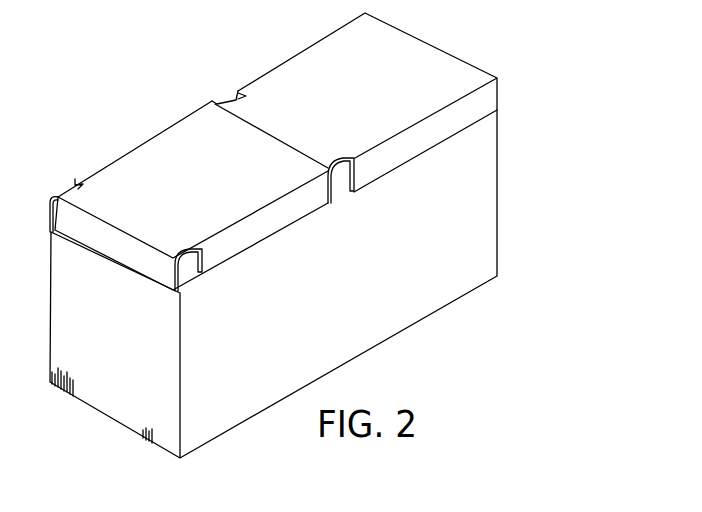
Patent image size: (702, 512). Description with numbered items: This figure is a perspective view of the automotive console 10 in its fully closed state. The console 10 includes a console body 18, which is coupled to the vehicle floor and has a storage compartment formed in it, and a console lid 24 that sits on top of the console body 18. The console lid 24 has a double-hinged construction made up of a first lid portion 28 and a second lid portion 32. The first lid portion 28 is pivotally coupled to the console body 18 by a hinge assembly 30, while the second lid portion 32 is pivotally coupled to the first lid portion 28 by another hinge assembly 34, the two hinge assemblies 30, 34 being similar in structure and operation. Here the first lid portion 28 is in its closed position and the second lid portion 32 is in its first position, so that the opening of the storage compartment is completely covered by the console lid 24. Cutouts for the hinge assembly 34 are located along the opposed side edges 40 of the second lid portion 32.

The automotive console 10 is at (289, 235).
The console body 18 is at (347, 343).
The console lid 24 is at (276, 151).
The first lid portion 28 is at (135, 163).
The hinge assembly 30 is at (192, 276).
The second lid portion 32 is at (433, 53).
The hinge assembly 34 is at (338, 185).
The side edges 40 is at (242, 80).